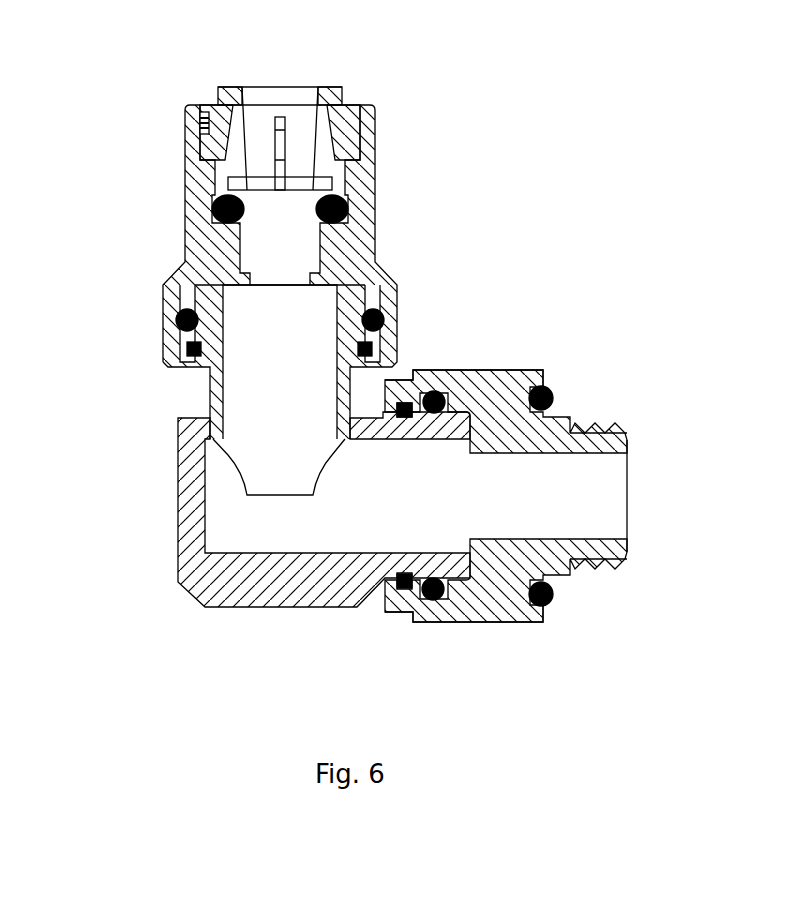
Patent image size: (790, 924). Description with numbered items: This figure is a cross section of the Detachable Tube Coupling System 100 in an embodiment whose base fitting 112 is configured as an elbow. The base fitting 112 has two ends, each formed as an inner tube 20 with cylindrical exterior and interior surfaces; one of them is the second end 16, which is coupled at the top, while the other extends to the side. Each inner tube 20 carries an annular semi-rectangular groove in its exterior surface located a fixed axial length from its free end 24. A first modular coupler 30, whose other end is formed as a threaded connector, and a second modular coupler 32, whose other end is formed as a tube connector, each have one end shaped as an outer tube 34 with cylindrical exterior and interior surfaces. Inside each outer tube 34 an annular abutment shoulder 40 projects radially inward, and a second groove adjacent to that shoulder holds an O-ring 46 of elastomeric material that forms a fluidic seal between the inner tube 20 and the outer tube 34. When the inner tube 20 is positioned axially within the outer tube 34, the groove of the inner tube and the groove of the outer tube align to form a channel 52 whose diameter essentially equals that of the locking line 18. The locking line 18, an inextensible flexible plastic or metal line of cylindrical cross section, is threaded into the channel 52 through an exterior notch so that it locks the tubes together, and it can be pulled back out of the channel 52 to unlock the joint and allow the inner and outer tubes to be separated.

The Detachable Tube Coupling System 100 is at (126, 58).
The second modular coupler 32 is at (378, 130).
The second end 16 is at (208, 380).
The annular abutment shoulder 40 is at (180, 328).
The locking line 18 is at (406, 412).
The outer tube 34 is at (503, 370).
The inner tube 20 is at (470, 416).
The first modular coupler 30 is at (622, 432).
The base fitting 112 is at (193, 593).
The channel 52 is at (396, 416).
The O-ring 46 is at (440, 597).
The free end 24 is at (553, 580).